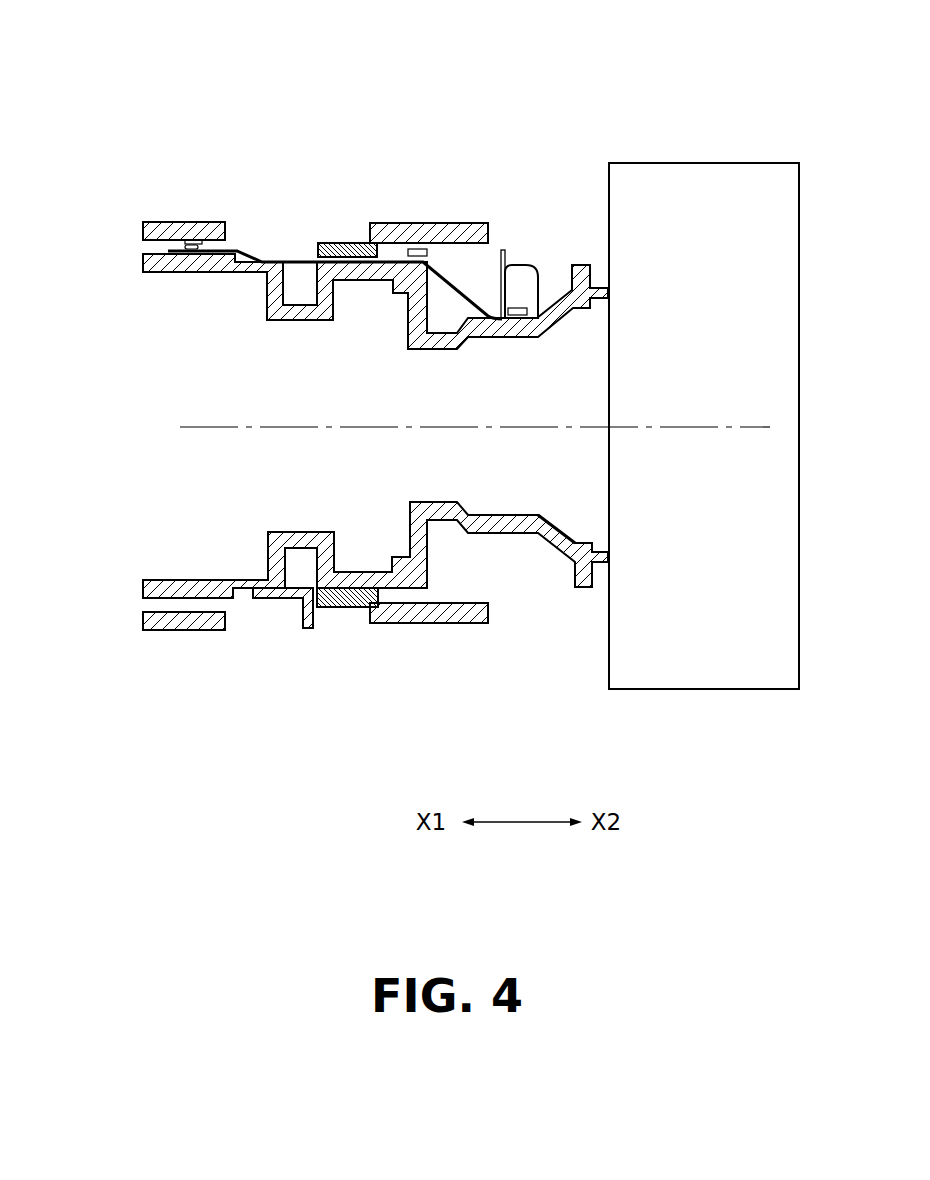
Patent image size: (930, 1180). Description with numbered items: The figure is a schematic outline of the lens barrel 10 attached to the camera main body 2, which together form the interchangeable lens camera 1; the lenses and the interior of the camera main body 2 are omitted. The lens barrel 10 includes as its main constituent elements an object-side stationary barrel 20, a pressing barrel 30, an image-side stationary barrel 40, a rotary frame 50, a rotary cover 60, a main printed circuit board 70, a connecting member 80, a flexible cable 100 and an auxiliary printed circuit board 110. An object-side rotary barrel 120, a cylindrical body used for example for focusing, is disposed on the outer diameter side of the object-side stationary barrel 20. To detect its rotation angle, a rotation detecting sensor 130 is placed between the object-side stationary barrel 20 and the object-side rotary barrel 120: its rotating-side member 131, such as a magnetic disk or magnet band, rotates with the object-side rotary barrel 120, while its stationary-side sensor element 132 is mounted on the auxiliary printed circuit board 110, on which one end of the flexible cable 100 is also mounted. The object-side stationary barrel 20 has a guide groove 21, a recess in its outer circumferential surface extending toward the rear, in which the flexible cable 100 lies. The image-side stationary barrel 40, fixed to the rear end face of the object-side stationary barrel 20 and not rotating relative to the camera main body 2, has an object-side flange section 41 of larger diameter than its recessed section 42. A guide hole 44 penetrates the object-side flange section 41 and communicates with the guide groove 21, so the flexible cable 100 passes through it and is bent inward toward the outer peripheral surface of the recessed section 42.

The interchangeable lens camera 1 is at (345, 96).
The camera main body 2 is at (698, 667).
The lens barrel 10 is at (375, 238).
The object-side stationary barrel 20 is at (190, 630).
The guide groove 21 is at (357, 272).
The pressing barrel 30 is at (279, 600).
The image-side stationary barrel 40 is at (375, 552).
The object-side flange section 41 is at (432, 540).
The recessed section 42 is at (446, 322).
The guide hole 44 is at (402, 230).
The rotary frame 50 is at (344, 607).
The rotary cover 60 is at (431, 623).
The main printed circuit board 70 is at (505, 252).
The connecting member 80 is at (518, 320).
The flexible cable 100 is at (447, 270).
The auxiliary printed circuit board 110 is at (180, 254).
The object-side rotary barrel 120 is at (176, 224).
The rotation detecting sensor 130 is at (160, 248).
The rotating-side member 131 is at (200, 241).
The stationary-side sensor element 132 is at (192, 252).